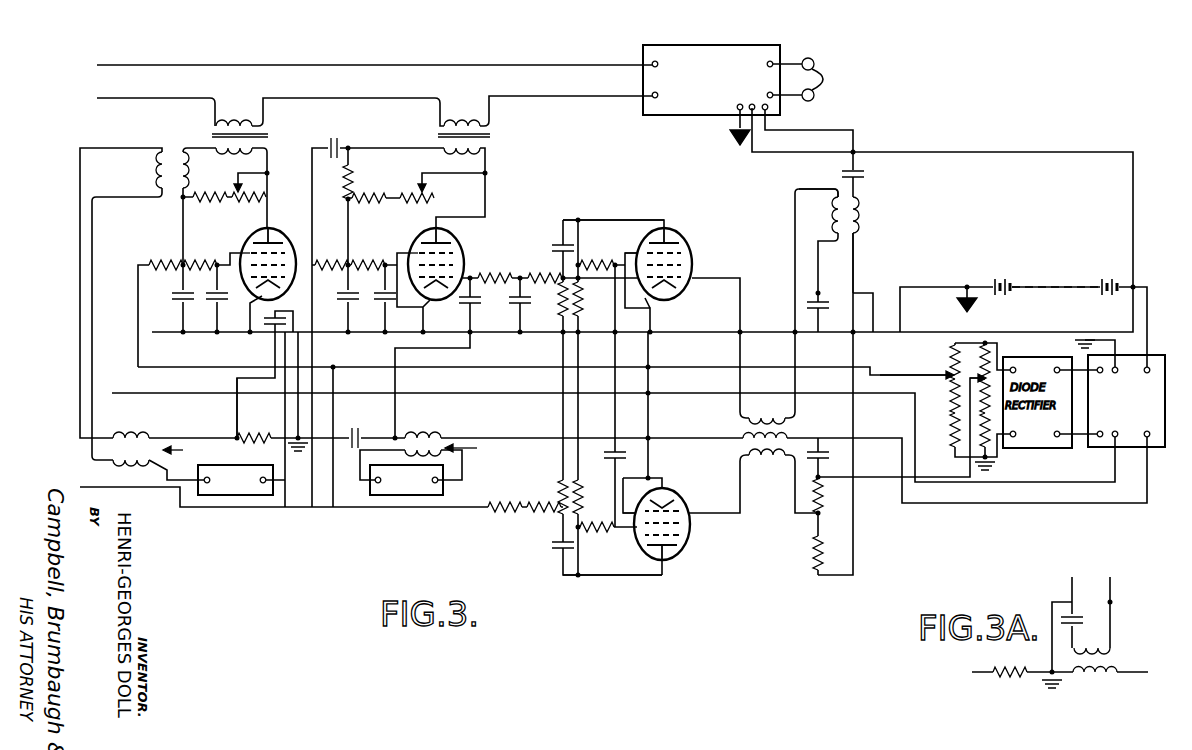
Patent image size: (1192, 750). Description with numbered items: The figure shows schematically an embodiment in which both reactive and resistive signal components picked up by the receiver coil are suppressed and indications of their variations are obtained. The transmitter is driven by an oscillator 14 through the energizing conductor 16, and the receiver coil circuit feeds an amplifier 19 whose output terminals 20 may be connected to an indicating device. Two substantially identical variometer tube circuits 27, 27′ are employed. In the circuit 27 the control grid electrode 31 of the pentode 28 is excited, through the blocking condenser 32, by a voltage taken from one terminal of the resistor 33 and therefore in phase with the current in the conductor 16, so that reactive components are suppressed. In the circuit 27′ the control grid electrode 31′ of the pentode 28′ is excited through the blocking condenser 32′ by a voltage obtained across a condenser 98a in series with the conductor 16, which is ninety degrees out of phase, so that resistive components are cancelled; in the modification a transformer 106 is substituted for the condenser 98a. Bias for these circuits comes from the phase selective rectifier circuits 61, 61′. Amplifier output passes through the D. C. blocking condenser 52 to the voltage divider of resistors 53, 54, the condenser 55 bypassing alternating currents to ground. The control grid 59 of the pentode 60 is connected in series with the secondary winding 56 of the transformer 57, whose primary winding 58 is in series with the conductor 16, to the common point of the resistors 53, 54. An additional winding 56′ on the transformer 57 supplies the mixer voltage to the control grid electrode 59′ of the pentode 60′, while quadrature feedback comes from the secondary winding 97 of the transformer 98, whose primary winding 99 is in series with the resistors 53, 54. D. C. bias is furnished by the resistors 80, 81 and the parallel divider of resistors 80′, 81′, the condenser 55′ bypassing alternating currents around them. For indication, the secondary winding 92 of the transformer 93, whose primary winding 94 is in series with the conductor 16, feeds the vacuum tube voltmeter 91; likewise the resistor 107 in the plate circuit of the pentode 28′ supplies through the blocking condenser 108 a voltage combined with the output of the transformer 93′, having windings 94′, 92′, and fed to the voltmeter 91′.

In FIG. 3, the amplifier 19 is at (706, 47).
In FIG. 3, the output terminals 20 is at (820, 66).
In FIG. 3, the variometer tube circuit 27 is at (284, 168).
In FIG. 3, the blocking condenser 108 is at (345, 146).
In FIG. 3, the resistor 107 is at (352, 183).
In FIG. 3, the variometer tube circuit 27′ is at (518, 193).
In FIG. 3, the phase selective rectifier circuit 61′ is at (620, 210).
In FIG. 3, the pentode 60′ is at (683, 233).
In FIG. 3, the control grid electrode 59′ is at (680, 276).
In FIG. 3, the transformer 98 is at (838, 193).
In FIG. 3, the D. C. blocking condenser 52 is at (866, 178).
In FIG. 3, the secondary winding 97 is at (834, 211).
In FIG. 3, the primary winding 99 is at (862, 218).
In FIG. 3, the condenser 55′ is at (822, 302).
In FIG. 3, the pentode 28 is at (278, 232).
In FIG. 3, the control grid electrode 31 is at (287, 276).
In FIG. 3, the pentode 28′ is at (462, 243).
In FIG. 3, the control grid electrode 31′ is at (450, 286).
In FIG. 3, the blocking condenser 32 is at (272, 326).
In FIG. 3, the blocking condenser 32′ is at (474, 302).
In FIG. 3A, the blocking condenser 32′ is at (1078, 614).
In FIG. 3, the resistor 80′ is at (951, 362).
In FIG. 3, the resistor 80 is at (989, 368).
In FIG. 3, the resistor 81′ is at (952, 412).
In FIG. 3, the resistor 81 is at (990, 421).
In FIG. 3, the winding 56′ is at (766, 415).
In FIG. 3, the primary winding 58 is at (746, 431).
In FIG. 3, the transformer 57 is at (734, 449).
In FIG. 3, the secondary winding 56 is at (766, 461).
In FIG. 3, the condenser 55 is at (835, 457).
In FIG. 3, the resistor 53 is at (828, 490).
In FIG. 3, the resistor 54 is at (812, 531).
In FIG. 3, the control grid 59 is at (675, 515).
In FIG. 3, the pentode tube 60 is at (690, 549).
In FIG. 3, the phase selective circuit 61 is at (640, 588).
In FIG. 3, the primary winding 94 is at (145, 437).
In FIG. 3, the conductor 16 is at (237, 432).
In FIG. 3, the resistor 33 is at (258, 433).
In FIG. 3A, the resistor 33 is at (1008, 677).
In FIG. 3, the transformer 93 is at (184, 453).
In FIG. 3, the secondary winding 92 is at (142, 463).
In FIG. 3, the vacuum tube voltmeter 91 is at (243, 497).
In FIG. 3, the condenser 98a is at (358, 433).
In FIG. 3, the primary winding 94′ is at (428, 432).
In FIG. 3, the transformer 93′ is at (475, 450).
In FIG. 3, the secondary winding 92′ is at (450, 462).
In FIG. 3, the vacuum tube voltmeter 91′ is at (413, 497).
In FIG. 3, the oscillator 14 is at (1105, 446).
In FIG. 3A, the transformer 106 is at (1120, 660).